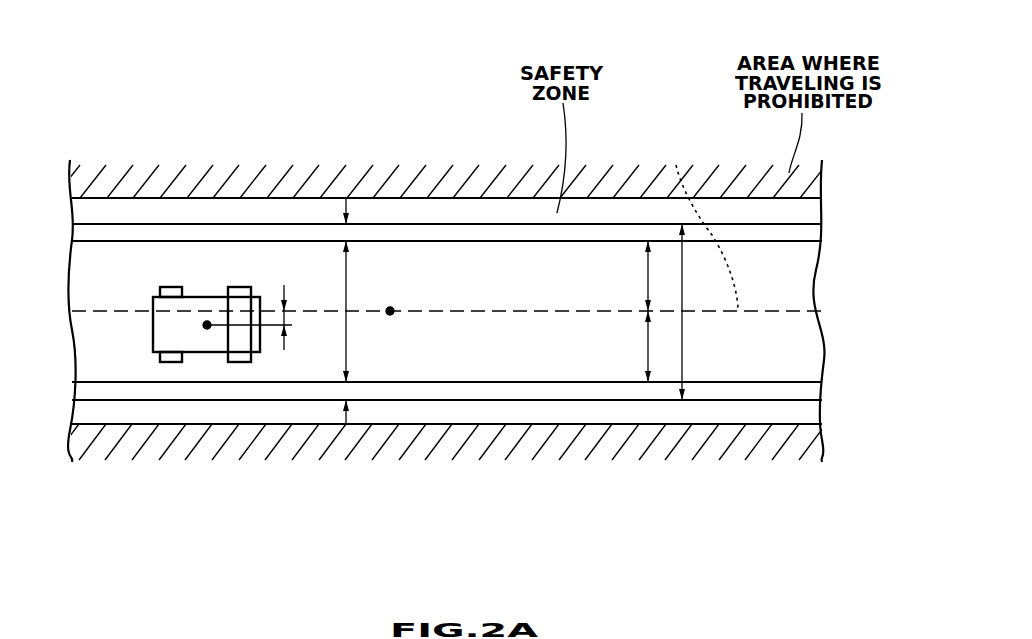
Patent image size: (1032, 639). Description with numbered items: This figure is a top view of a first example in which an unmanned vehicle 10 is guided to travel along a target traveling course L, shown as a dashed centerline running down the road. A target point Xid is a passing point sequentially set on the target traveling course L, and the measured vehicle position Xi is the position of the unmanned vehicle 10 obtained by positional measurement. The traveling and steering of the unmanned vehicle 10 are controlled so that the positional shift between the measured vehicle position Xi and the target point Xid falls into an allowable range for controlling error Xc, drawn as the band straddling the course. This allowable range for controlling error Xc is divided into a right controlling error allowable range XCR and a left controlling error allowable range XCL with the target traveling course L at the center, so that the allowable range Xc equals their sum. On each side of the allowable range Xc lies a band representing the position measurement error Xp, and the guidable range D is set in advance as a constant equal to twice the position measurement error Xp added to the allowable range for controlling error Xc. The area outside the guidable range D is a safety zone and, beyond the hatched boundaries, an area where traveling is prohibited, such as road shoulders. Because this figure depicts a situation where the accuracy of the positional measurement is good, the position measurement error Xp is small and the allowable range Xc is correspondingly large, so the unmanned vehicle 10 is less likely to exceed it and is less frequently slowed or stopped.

The unmanned vehicle 10 is at (208, 352).
The measured vehicle position Xi is at (207, 325).
The position measurement error Xp is at (377, 498).
The target point Xid is at (390, 311).
The allowable range for controlling error Xc is at (346, 335).
The left controlling error allowable range XCL is at (629, 276).
The right controlling error allowable range XCR is at (629, 346).
The guidable range D is at (682, 342).
The target traveling course L is at (676, 165).